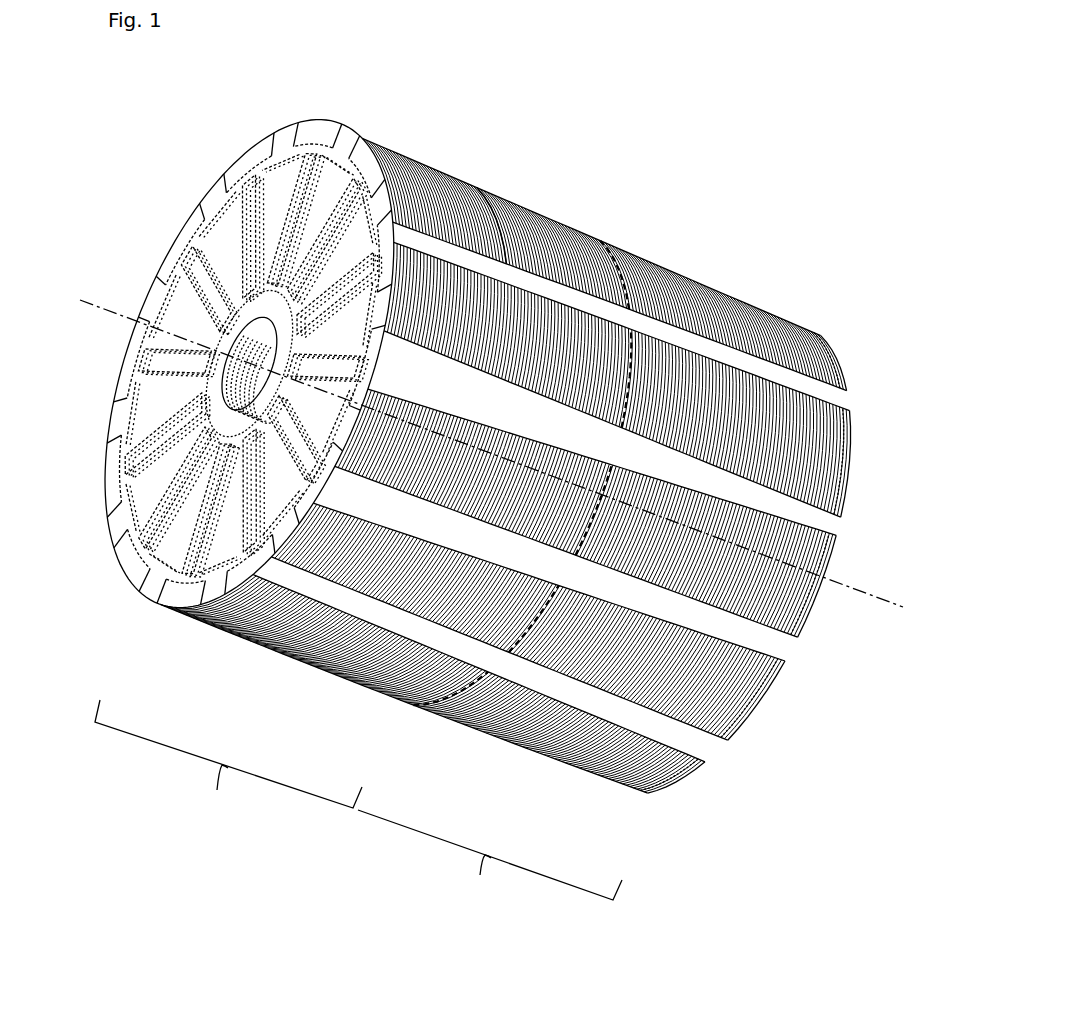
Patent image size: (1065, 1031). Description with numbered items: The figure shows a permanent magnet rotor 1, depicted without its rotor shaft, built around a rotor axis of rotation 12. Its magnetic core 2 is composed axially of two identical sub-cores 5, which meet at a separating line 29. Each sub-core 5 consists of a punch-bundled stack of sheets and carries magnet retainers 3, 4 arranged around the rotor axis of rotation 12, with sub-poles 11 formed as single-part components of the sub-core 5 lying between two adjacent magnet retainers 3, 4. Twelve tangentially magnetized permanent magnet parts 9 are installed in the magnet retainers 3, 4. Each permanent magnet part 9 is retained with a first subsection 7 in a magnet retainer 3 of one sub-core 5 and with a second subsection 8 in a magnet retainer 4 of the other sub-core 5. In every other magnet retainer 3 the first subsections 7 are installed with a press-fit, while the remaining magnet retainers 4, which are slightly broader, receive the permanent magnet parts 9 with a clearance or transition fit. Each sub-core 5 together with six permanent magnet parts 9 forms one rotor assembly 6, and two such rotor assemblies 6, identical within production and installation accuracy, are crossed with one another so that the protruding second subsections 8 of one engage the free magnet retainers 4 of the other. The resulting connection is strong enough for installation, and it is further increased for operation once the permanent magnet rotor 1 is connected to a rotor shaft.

The permanent magnet rotor 1 is at (757, 148).
The magnetic core 2 is at (608, 228).
The magnet retainer 3 is at (345, 128).
The magnet retainer 4 is at (250, 173).
The sub-core 5 is at (195, 217).
The rotor assembly 6 is at (363, 579).
The first subsection 7 is at (307, 163).
The second subsection 8 is at (250, 193).
The permanent magnet part 9 is at (856, 428).
The sub-pole 11 is at (453, 213).
The rotor axis of rotation 12 is at (97, 307).
The separating line 29 is at (455, 690).